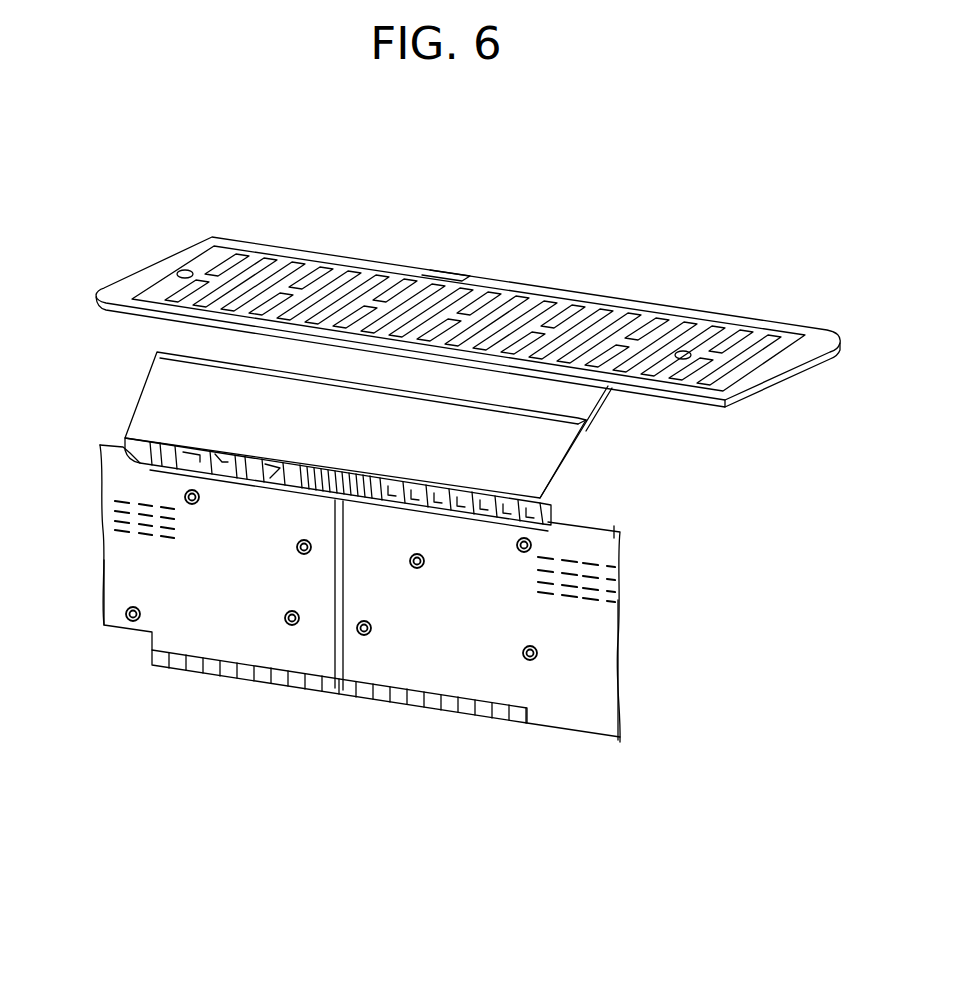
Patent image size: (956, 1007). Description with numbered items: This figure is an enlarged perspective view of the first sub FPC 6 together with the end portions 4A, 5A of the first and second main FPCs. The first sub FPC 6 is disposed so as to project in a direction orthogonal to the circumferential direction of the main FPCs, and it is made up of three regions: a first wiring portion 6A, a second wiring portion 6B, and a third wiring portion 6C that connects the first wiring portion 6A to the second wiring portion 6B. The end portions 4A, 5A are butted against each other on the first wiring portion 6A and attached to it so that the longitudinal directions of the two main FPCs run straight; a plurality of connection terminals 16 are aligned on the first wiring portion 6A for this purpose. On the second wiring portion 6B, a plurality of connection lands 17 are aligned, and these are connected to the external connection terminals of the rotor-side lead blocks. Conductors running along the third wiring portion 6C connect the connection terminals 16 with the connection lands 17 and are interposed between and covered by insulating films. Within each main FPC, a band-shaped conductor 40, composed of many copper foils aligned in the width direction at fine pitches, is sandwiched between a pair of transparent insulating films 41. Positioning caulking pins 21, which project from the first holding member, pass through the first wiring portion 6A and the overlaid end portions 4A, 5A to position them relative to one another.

The first sub FPC 6 is at (800, 414).
The first wiring portion 6A is at (588, 543).
The second wiring portion 6B is at (681, 400).
The third wiring portion 6C is at (553, 452).
The connection lands 17 is at (320, 258).
The connection terminals 16 is at (238, 672).
The positioning caulking pins 21 is at (299, 618).
The band-shaped conductor 40 is at (105, 528).
The insulating films 41 is at (138, 574).
The end portion of the first main FPC 4A is at (215, 596).
The end portion of the second main FPC 5A is at (452, 630).